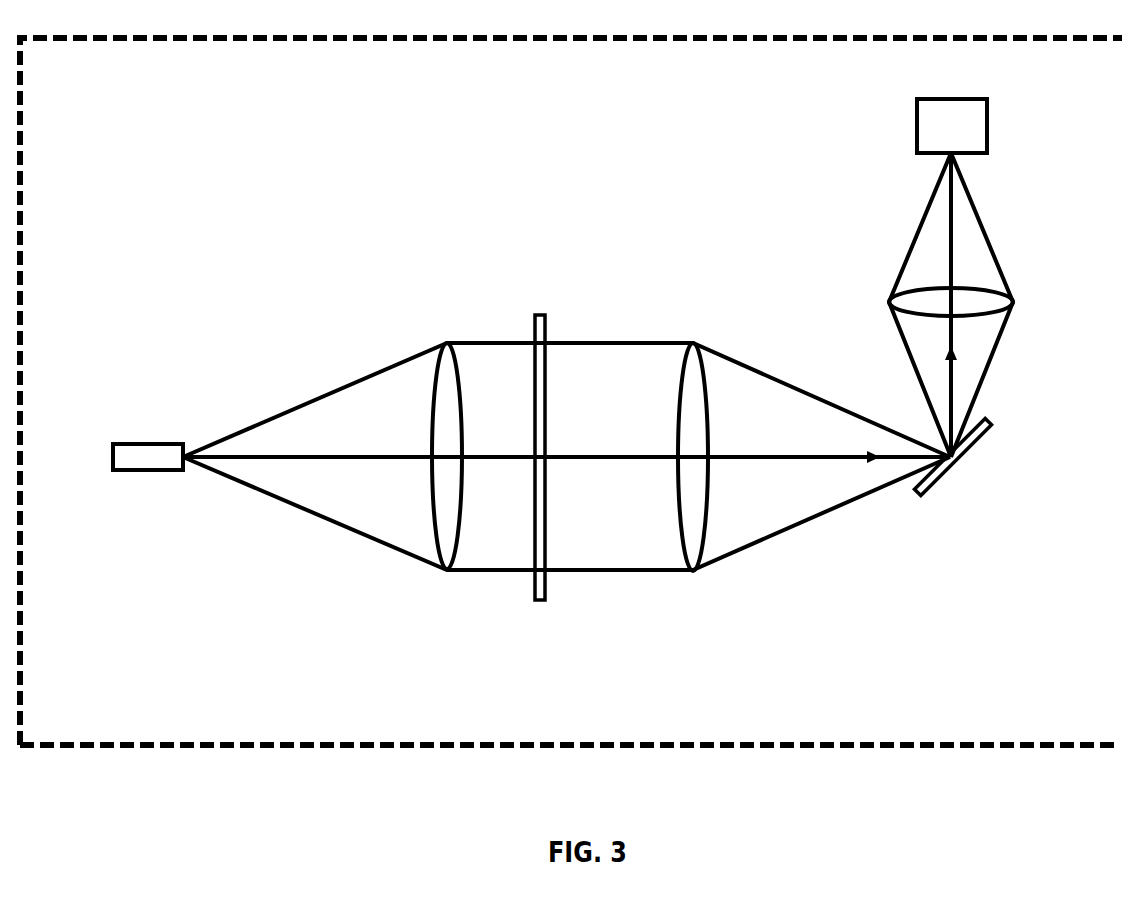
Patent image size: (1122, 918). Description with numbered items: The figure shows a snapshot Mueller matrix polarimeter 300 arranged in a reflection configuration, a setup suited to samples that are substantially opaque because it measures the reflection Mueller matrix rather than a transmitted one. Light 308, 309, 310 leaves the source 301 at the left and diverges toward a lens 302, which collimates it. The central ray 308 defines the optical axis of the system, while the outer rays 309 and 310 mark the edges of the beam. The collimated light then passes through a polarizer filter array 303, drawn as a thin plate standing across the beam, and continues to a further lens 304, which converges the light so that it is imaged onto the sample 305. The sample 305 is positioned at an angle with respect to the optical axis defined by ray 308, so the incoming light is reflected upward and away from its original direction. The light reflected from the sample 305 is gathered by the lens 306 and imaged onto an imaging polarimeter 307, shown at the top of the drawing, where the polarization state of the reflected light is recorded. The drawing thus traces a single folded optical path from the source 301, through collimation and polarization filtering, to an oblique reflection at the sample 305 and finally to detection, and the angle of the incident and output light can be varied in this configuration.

The snapshot Mueller matrix polarimeter 300 is at (571, 420).
The source 301 is at (140, 470).
The lens 302 is at (457, 540).
The polarizer filter array 303 is at (547, 590).
The lens 304 is at (706, 397).
The sample 305 is at (935, 485).
The lens 306 is at (1013, 302).
The imaging polarimeter 307 is at (987, 135).
The ray 308 is at (302, 460).
The light 309 is at (315, 395).
The light 310 is at (205, 468).